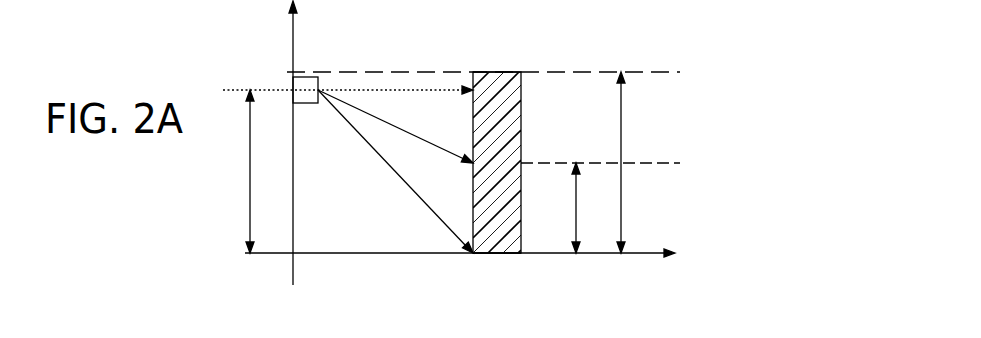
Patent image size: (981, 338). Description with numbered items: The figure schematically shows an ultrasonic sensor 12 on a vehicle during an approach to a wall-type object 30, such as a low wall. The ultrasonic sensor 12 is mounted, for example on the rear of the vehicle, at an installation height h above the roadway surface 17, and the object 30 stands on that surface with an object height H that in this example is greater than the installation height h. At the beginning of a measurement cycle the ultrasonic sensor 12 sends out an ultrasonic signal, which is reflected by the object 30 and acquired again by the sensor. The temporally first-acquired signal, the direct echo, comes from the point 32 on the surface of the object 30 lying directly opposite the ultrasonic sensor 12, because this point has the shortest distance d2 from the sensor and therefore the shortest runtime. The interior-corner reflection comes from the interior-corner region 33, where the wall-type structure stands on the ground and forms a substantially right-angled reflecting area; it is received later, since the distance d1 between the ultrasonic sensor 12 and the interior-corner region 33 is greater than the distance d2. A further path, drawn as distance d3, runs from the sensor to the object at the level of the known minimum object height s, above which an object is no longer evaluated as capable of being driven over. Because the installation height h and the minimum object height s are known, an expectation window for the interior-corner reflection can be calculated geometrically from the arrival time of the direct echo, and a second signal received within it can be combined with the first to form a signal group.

The ultrasonic sensor 12 is at (274, 68).
The roadway surface 17 is at (462, 143).
The wall-type object 30 is at (531, 118).
The point on the surface of the object 32 is at (471, 87).
The interior-corner region 33 is at (473, 255).
The distance between ultrasonic sensor and interior-corner region d1 is at (370, 147).
The shortest distance d2 is at (379, 89).
The distance to intermediate point d3 is at (421, 141).
The installation height h is at (241, 171).
The object height H is at (610, 162).
The minimum object height s is at (566, 208).